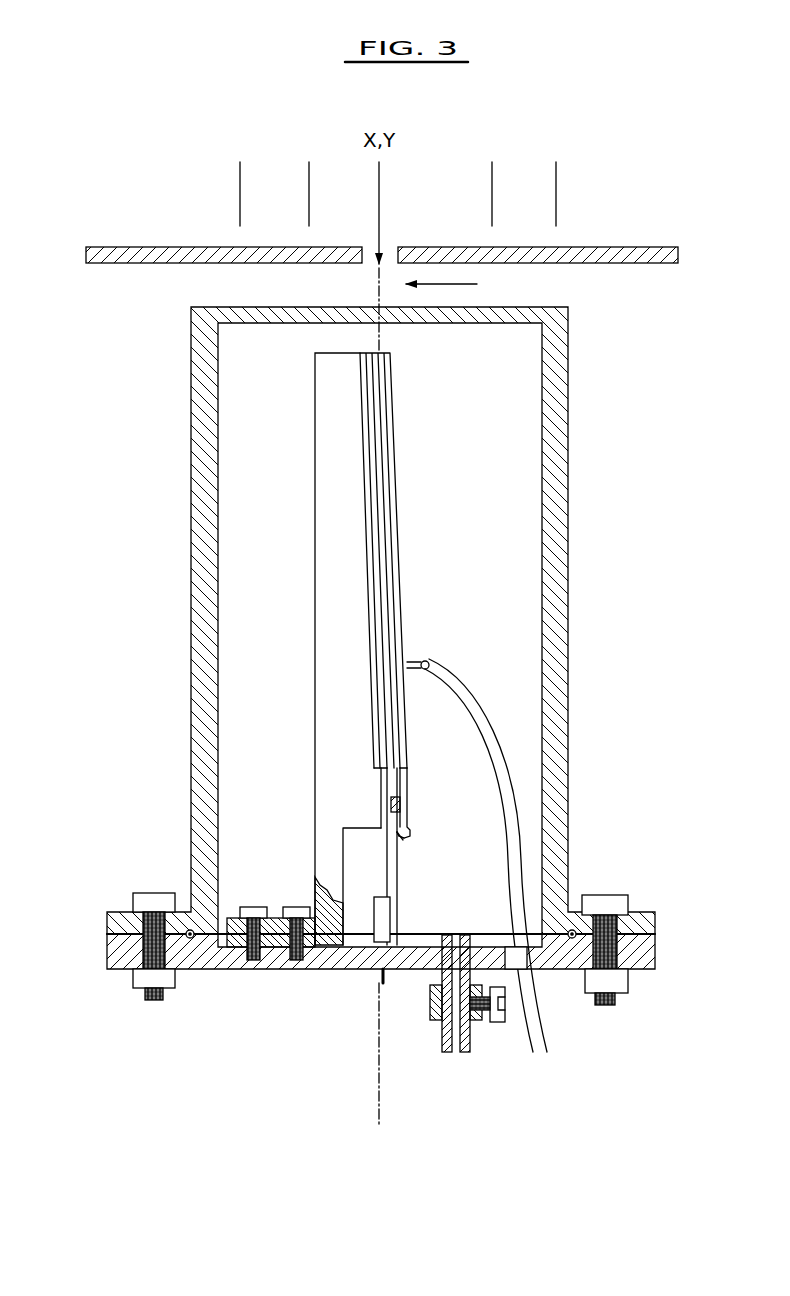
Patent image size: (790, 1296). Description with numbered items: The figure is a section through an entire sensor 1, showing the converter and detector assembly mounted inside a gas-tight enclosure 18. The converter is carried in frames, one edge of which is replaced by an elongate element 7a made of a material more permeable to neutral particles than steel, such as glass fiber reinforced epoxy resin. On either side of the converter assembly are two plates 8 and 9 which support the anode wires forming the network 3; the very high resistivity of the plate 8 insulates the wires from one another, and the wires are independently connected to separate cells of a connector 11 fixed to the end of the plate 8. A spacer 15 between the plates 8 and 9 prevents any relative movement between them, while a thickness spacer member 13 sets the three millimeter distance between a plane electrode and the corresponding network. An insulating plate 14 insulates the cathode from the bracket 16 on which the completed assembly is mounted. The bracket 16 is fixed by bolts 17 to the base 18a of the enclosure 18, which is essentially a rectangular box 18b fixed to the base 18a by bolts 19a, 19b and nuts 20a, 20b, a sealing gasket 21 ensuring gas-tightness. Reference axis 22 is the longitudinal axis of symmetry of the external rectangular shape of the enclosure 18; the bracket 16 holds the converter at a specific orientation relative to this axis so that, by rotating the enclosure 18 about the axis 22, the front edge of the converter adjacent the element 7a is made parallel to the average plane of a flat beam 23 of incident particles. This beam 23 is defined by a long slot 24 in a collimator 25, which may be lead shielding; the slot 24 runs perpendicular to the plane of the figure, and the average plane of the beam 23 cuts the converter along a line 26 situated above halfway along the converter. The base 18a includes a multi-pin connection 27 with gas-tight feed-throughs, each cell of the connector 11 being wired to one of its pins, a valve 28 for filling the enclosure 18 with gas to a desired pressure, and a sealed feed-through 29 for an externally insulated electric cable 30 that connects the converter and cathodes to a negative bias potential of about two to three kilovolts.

The sensor 1 is at (398, 669).
The network 3 is at (408, 843).
The elongate element 7a is at (389, 353).
The plate 8 is at (388, 855).
The plate 9 is at (408, 812).
The connector 11 is at (380, 908).
The spacer member 13 is at (366, 579).
The insulating plate 14 is at (360, 353).
The spacer 15 is at (400, 802).
The bracket 16 is at (352, 574).
The bolts 17 is at (295, 906).
The gas-tight enclosure 18 is at (348, 961).
The base 18a is at (313, 962).
The rectangular box 18b is at (204, 733).
The bolt 19a is at (153, 893).
The bolt 19b is at (609, 895).
The nut 20a is at (135, 978).
The nut 20b is at (626, 986).
The sealing gasket 21 is at (192, 940).
The longitudinal axis of symmetry 22 is at (380, 1110).
The flat beam 23 is at (457, 285).
The slot 24 is at (400, 237).
The collimator 25 is at (129, 248).
The line 26 is at (387, 566).
The multi-pin connection 27 is at (376, 972).
The valve 28 is at (470, 1040).
The sealed feed-through 29 is at (508, 946).
The electric cable 30 is at (467, 700).